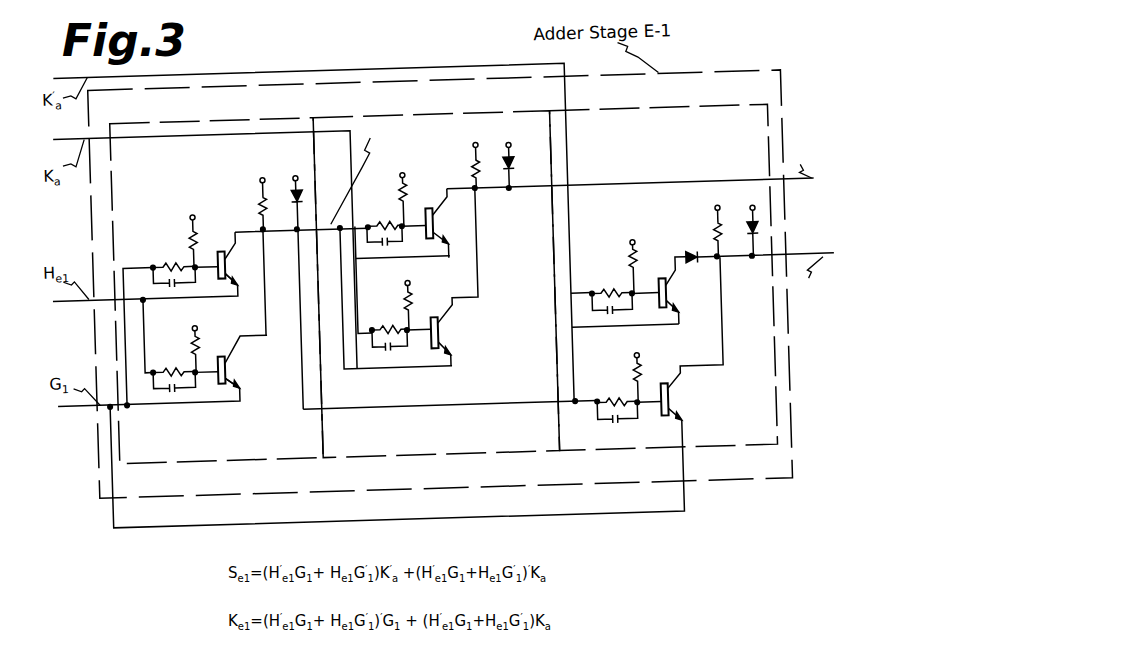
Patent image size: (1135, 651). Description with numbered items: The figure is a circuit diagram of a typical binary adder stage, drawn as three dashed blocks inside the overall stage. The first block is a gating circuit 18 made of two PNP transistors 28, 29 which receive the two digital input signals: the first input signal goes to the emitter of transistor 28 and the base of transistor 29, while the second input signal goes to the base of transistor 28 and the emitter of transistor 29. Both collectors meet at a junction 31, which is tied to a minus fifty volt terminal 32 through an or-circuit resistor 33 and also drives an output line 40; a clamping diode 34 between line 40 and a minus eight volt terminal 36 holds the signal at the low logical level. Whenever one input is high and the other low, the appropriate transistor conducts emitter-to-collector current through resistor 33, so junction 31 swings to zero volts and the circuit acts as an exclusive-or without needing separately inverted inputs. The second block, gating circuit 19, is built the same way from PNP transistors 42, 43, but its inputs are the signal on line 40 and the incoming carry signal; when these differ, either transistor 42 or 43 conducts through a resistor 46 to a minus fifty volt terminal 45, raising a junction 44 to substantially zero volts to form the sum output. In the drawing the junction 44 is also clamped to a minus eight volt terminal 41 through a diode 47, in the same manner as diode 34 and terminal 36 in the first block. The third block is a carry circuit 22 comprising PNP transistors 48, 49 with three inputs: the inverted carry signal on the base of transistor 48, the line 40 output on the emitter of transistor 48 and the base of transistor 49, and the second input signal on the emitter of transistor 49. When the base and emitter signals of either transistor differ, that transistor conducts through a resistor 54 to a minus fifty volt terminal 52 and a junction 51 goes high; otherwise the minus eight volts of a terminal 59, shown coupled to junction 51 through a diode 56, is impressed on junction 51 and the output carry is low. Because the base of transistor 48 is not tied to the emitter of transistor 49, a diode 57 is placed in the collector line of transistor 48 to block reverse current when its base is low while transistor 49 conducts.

The gating circuit 18 is at (234, 128).
The gating circuit 19 is at (425, 129).
The carry circuit 22 is at (687, 129).
The PNP transistor 28 is at (209, 263).
The PNP transistor 29 is at (208, 366).
The junction 31 is at (257, 246).
The -50 volt terminal 32 is at (255, 190).
The or circuit resistor 33 is at (254, 215).
The clamping diode 34 is at (297, 205).
The -8 volt terminal 36 is at (293, 190).
The output line 40 is at (324, 235).
The -8 volt terminal 41 is at (505, 161).
The PNP transistor 42 is at (418, 229).
The PNP transistor 43 is at (418, 326).
The junction 44 is at (470, 205).
The -50 volt terminal 45 is at (471, 161).
The resistor 46 is at (470, 184).
The diode 47 is at (506, 179).
The PNP transistor 48 is at (649, 299).
The PNP transistor 49 is at (650, 430).
The junction 51 is at (712, 280).
The -50 volt terminal 52 is at (709, 232).
The resistor 54 is at (710, 256).
The diode 56 is at (746, 255).
The diode 57 is at (684, 284).
The -8 volt terminal 59 is at (749, 231).